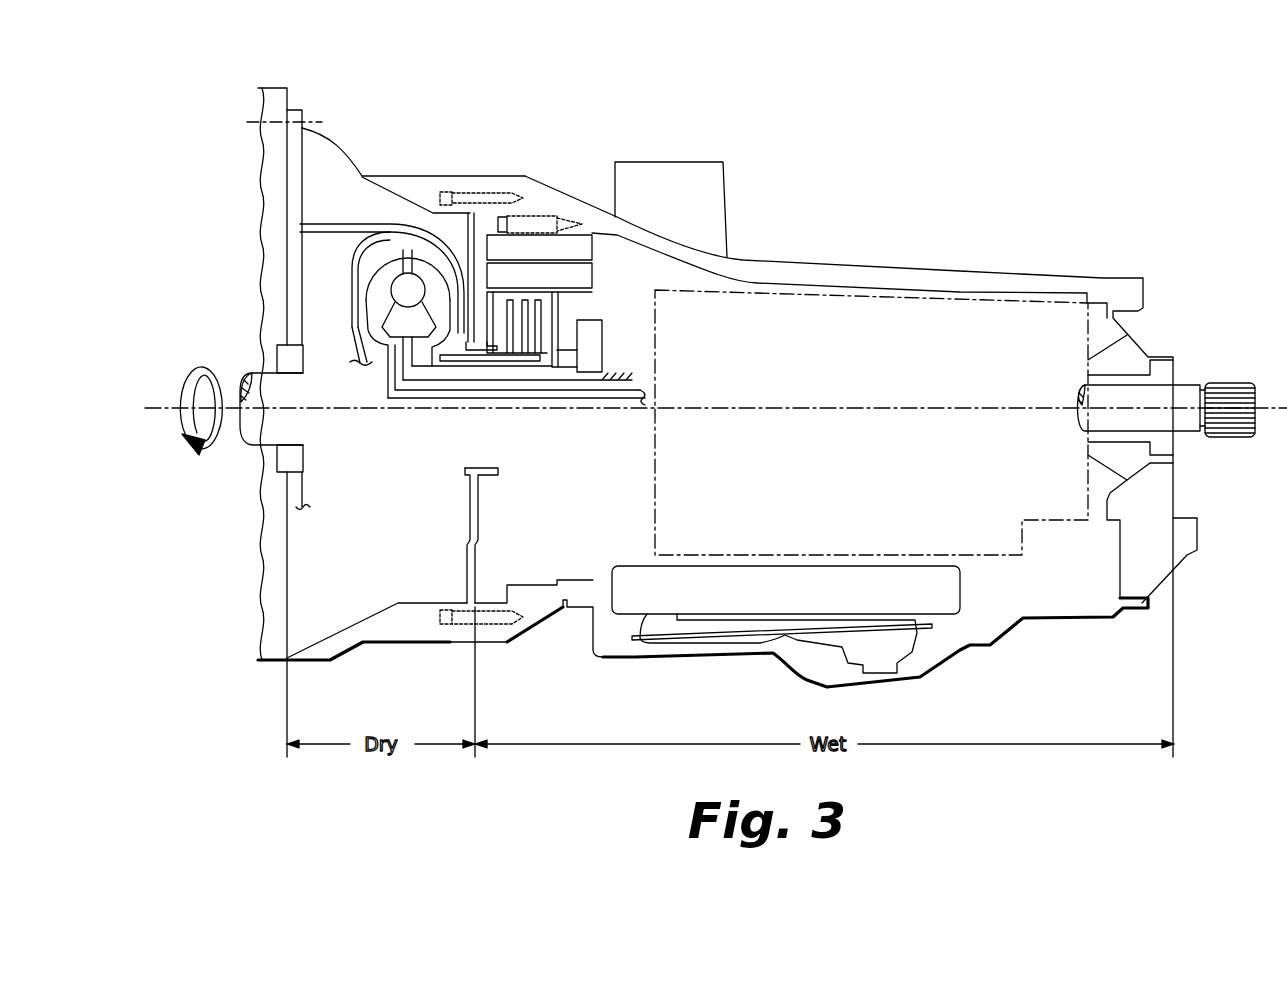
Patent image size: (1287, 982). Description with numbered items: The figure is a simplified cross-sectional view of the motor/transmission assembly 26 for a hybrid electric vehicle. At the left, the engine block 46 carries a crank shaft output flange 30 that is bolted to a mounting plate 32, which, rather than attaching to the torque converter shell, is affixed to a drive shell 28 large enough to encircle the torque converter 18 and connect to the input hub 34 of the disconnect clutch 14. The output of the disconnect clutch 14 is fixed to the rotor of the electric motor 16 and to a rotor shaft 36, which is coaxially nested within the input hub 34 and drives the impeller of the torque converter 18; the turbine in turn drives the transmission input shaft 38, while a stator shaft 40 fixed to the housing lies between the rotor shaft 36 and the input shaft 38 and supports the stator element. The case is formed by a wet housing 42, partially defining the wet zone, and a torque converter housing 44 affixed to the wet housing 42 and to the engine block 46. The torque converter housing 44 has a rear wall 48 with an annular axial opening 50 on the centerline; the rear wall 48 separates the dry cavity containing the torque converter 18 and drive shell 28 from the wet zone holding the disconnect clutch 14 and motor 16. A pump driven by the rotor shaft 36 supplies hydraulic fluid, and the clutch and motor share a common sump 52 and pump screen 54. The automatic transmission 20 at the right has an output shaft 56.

The disconnect clutch 14 is at (553, 313).
The electric motor 16 is at (568, 230).
The torque converter 18 is at (440, 266).
The automatic transmission 20 is at (930, 300).
The motor/transmission assembly 26 is at (795, 153).
The drive shell 28 is at (356, 224).
The crank shaft output flange 30 is at (273, 362).
The mounting plate 32 is at (297, 290).
The input hub 34 is at (460, 367).
The rotor shaft 36 is at (473, 379).
The transmission input shaft 38 is at (583, 400).
The stator shaft 40 is at (540, 391).
The wet housing 42 is at (822, 262).
The torque converter housing 44 is at (342, 138).
The engine block 46 is at (258, 112).
The rear wall 48 is at (467, 512).
The annular axial opening 50 is at (489, 448).
The sump 52 is at (993, 597).
The pump screen 54 is at (915, 672).
The output shaft 56 is at (1187, 385).